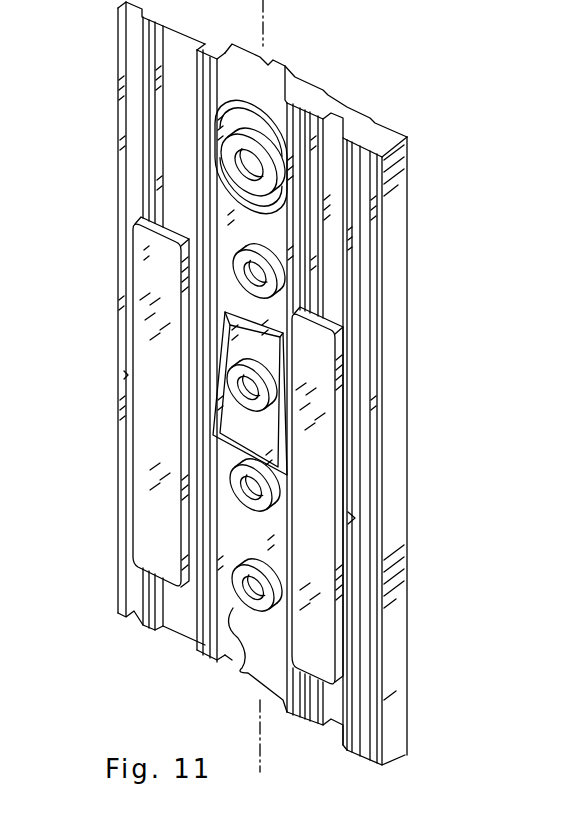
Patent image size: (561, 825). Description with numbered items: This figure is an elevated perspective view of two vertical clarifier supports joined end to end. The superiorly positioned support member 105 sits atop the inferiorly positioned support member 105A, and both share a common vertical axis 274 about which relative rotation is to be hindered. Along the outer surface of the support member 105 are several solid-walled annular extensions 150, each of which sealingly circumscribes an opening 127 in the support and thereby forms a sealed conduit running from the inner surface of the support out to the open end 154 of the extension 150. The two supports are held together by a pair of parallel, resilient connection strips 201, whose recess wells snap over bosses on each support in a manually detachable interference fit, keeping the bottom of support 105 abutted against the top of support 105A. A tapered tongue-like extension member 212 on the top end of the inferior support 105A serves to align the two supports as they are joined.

The support member 105 is at (397, 338).
The support member 105A is at (390, 730).
The opening 127 is at (240, 668).
The annular extension 150 is at (240, 279).
The open end of the extension 154 is at (337, 460).
The connection strip 201 is at (150, 483).
The tongue-like extension member 212 is at (223, 357).
The vertical axis 274 is at (264, 8).